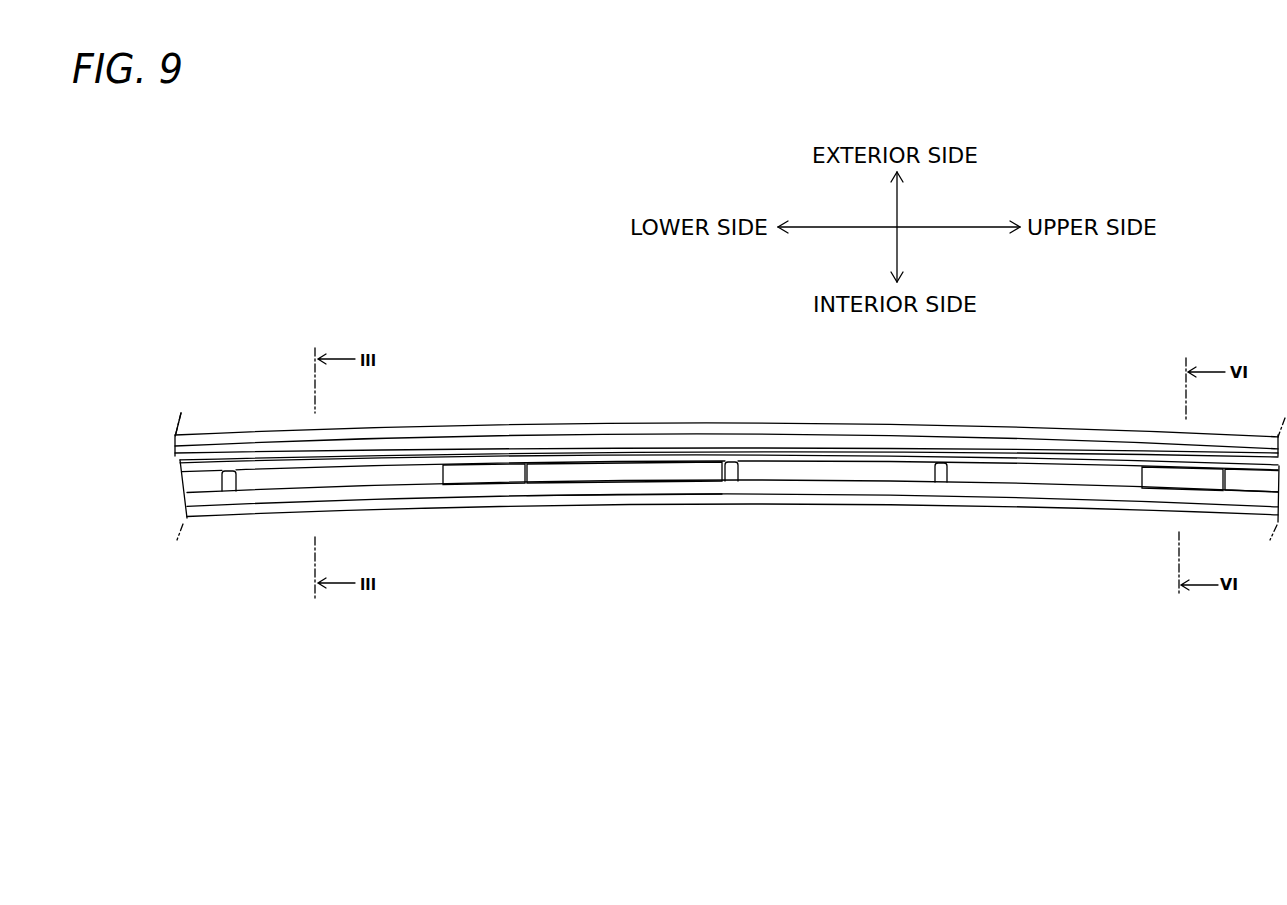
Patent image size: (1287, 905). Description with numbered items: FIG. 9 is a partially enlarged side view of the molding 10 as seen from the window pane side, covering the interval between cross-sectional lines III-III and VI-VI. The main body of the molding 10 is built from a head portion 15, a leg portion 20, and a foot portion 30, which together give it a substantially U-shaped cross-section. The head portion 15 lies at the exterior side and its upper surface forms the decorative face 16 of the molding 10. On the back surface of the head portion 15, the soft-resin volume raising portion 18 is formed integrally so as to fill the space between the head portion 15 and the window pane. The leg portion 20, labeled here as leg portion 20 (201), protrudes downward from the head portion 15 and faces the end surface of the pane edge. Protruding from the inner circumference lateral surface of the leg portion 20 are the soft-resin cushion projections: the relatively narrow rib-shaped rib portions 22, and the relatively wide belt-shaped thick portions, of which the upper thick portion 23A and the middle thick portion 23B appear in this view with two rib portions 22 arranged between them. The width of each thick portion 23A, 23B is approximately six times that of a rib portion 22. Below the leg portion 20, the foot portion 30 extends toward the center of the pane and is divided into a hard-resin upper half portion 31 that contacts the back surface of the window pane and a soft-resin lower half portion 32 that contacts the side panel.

The molding 10 is at (480, 366).
The head portion 15 is at (668, 427).
The decorative face 16 is at (587, 423).
The volume raising portion 18 is at (762, 445).
The leg portion 20 is at (730, 526).
The trim body 201 is at (820, 470).
The rib portion 22 is at (230, 492).
The upper thick portion 23A is at (1192, 482).
The middle thick portion 23B is at (485, 473).
The foot portion 30 is at (643, 555).
The upper half portion 31 is at (630, 487).
The lower half portion 32 is at (585, 497).